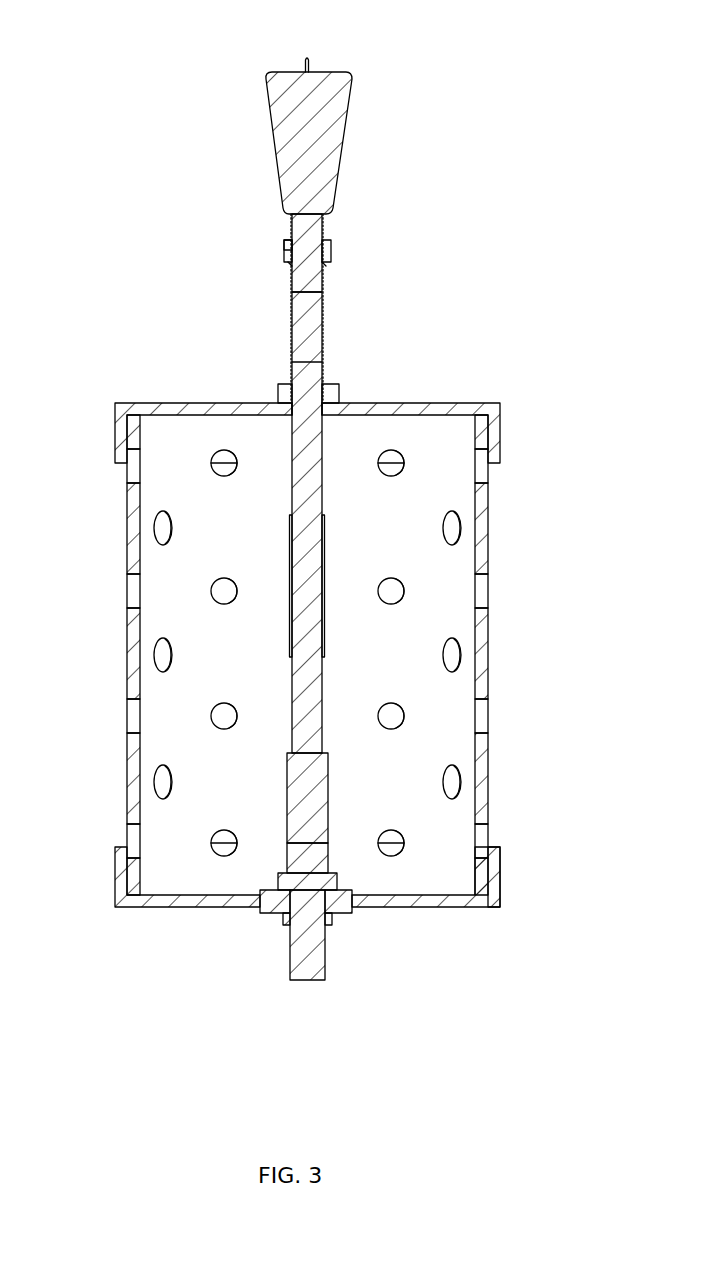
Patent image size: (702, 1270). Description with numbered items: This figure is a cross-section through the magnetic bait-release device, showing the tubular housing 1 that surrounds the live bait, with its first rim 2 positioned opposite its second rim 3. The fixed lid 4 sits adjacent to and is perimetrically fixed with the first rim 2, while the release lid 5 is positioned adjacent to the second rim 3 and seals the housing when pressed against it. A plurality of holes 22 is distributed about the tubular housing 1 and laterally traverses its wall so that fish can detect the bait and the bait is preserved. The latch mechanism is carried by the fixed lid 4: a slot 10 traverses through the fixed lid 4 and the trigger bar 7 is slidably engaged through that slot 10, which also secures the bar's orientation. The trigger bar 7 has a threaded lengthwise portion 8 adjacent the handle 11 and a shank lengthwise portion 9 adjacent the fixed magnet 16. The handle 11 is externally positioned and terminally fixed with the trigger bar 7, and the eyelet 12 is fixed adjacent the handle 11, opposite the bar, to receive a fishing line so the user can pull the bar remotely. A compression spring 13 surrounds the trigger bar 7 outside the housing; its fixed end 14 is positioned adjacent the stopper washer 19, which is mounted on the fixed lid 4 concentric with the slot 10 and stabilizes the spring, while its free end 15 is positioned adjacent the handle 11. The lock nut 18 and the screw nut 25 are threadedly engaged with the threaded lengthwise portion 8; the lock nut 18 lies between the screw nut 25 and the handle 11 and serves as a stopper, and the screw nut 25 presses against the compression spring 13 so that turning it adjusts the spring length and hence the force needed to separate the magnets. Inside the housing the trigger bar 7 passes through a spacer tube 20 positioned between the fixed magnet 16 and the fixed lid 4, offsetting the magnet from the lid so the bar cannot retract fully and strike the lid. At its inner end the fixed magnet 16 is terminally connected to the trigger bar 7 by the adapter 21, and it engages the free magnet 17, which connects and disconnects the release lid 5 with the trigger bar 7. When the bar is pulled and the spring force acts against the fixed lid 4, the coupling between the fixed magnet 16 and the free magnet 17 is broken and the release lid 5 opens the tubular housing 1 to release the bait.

The tubular housing 1 is at (339, 629).
The first rim 2 is at (138, 417).
The second rim 3 is at (135, 887).
The fixed lid 4 is at (492, 432).
The release lid 5 is at (497, 873).
The trigger bar 7 is at (307, 522).
The threaded lengthwise portion 8 is at (323, 283).
The shank lengthwise portion 9 is at (338, 388).
The slot 10 is at (323, 418).
The handle 11 is at (278, 142).
The eyelet 12 is at (282, 72).
The compression spring 13 is at (290, 333).
The fixed end 14 is at (292, 290).
The free end 15 is at (295, 373).
The fixed magnet 16 is at (288, 855).
The free magnet 17 is at (335, 877).
The lock nut 18 is at (288, 240).
The stopper washer 19 is at (278, 398).
The spacer tube 20 is at (292, 600).
The adapter 21 is at (323, 765).
The plurality of holes 22 is at (380, 477).
The screw nut 25 is at (288, 263).